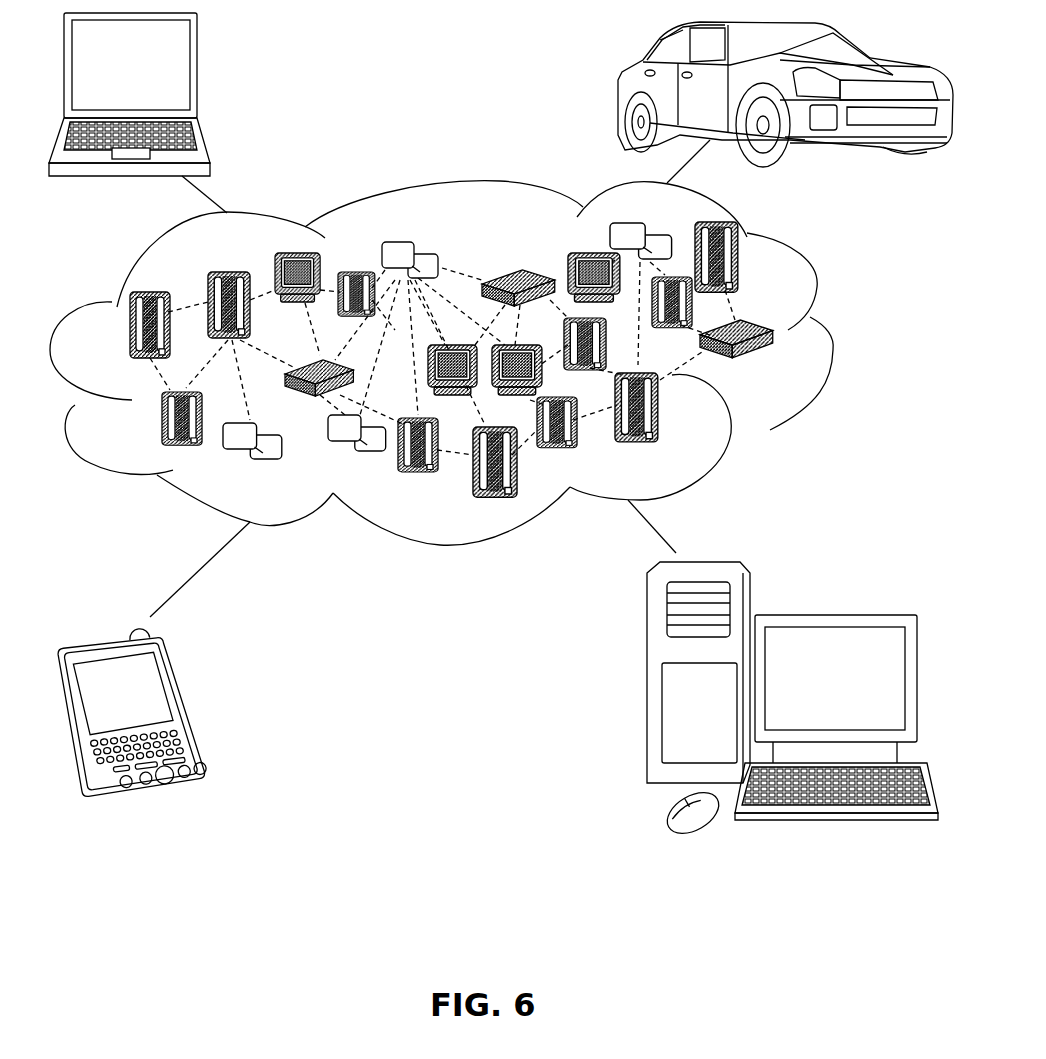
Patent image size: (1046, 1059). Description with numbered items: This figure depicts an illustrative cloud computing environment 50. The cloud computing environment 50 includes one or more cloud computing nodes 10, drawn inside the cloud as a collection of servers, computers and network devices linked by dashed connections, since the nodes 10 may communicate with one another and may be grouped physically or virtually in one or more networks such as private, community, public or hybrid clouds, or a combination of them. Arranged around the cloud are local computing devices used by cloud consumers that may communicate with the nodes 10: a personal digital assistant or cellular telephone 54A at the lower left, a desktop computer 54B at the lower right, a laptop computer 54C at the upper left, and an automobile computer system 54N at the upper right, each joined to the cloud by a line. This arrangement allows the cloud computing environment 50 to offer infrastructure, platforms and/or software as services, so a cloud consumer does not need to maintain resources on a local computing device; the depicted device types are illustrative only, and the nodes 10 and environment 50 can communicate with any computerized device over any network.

The cloud computing nodes 10 is at (467, 399).
The cloud computing environment 50 is at (833, 337).
The personal digital assistant or cellular telephone 54A is at (187, 707).
The desktop computer 54B is at (832, 615).
The laptop computer 54C is at (197, 72).
The automobile computer system 54N is at (620, 90).